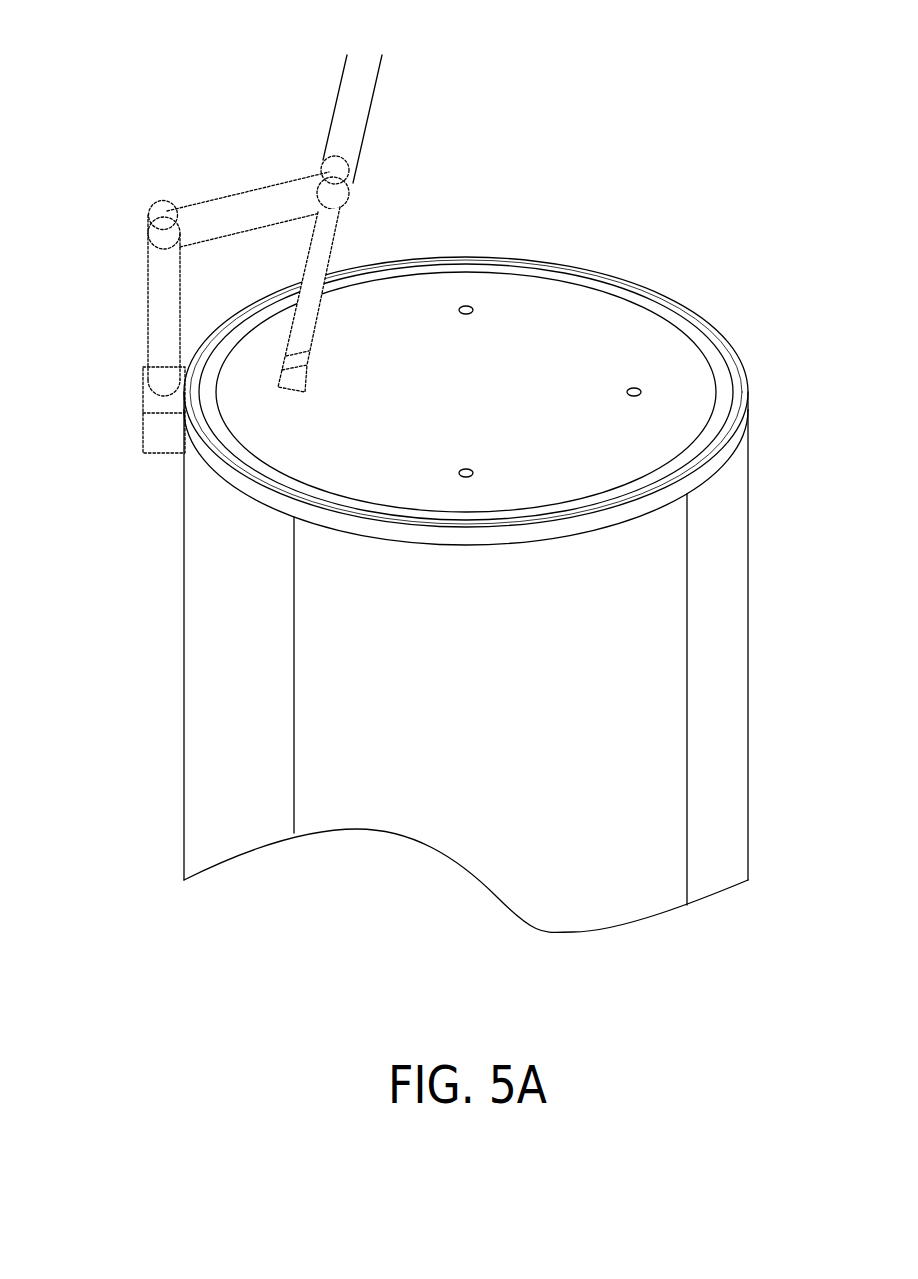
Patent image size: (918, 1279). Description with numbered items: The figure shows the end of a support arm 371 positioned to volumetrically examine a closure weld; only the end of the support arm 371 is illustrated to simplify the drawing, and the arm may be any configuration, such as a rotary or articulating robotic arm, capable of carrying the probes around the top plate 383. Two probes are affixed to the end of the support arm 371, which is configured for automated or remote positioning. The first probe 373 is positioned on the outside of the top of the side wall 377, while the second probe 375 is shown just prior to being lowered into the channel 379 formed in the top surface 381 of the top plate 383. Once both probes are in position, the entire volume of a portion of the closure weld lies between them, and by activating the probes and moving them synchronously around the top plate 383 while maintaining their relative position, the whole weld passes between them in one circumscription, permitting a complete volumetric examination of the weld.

The support arm 371 is at (347, 110).
The first probe 373 is at (152, 435).
The second probe 375 is at (287, 382).
The side wall 377 is at (188, 578).
The channel 379 is at (240, 453).
The top surface 381 is at (417, 302).
The top plate 383 is at (523, 263).